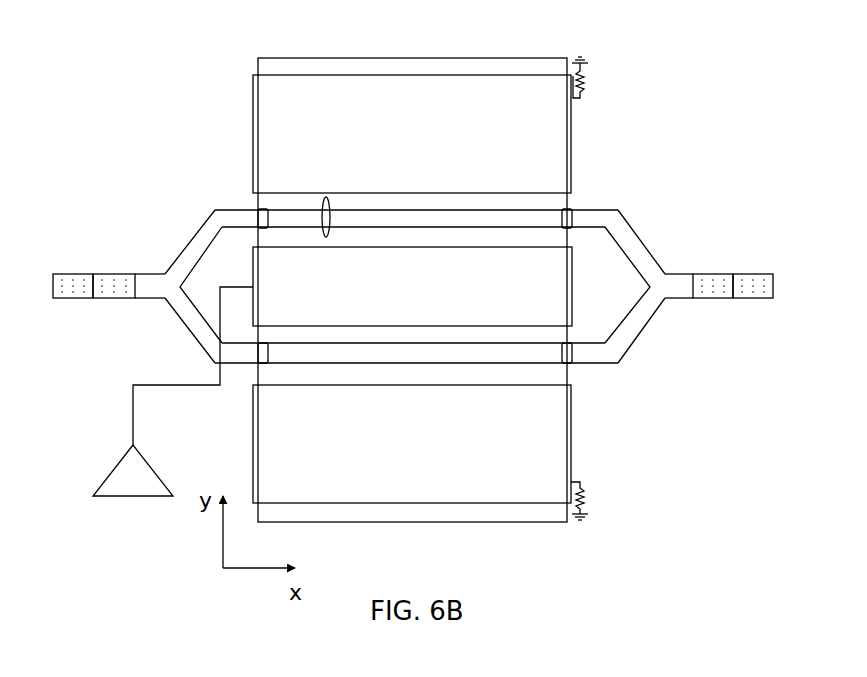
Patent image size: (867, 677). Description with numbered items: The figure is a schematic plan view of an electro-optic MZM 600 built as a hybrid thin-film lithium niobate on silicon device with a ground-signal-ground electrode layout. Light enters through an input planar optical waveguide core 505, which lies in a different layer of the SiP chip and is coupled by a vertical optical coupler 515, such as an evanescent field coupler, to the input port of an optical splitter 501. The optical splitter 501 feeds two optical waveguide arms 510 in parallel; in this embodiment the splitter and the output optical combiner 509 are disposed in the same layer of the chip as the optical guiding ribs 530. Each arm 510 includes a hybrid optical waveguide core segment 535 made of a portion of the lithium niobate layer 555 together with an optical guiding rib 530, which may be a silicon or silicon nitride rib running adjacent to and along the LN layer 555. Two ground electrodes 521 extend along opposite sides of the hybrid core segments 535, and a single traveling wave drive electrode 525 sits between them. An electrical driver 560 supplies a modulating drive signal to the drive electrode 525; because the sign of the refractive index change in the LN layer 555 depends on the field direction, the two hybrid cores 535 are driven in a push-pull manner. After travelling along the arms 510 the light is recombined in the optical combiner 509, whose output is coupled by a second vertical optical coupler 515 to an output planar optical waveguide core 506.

The electro-optic MZM 600 is at (431, 30).
The lithium niobate layer 555 is at (352, 58).
The ground electrodes 521 is at (431, 113).
The traveling wave drive electrode 525 is at (431, 293).
The optical guiding rib 530 is at (540, 209).
The optical waveguide arms 510 is at (241, 201).
The optical splitter 501 is at (159, 251).
The optical combiner 509 is at (669, 252).
The input planar optical waveguide core 505 is at (73, 300).
The vertical optical coupler 515 is at (111, 306).
The output planar optical waveguide core 506 is at (758, 300).
The hybrid optical waveguide core segment 535 is at (327, 197).
The electrical driver 560 is at (116, 463).